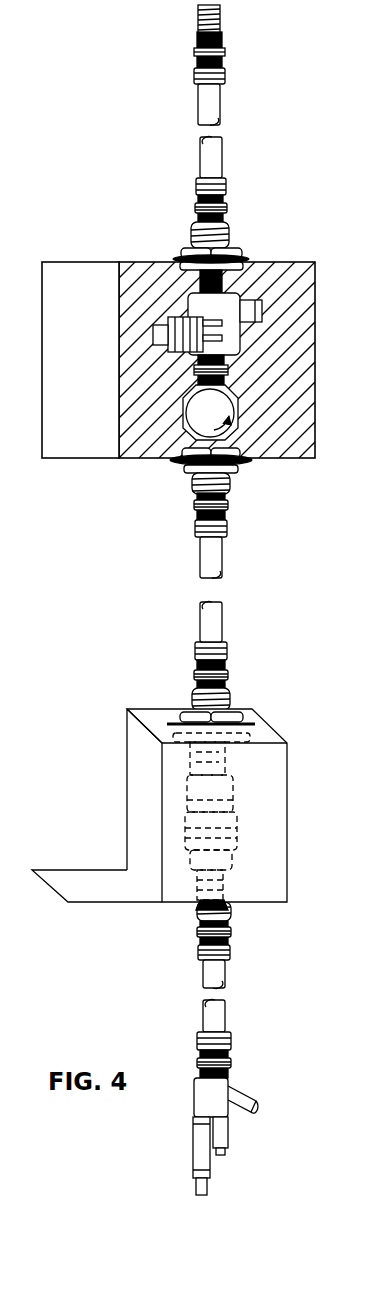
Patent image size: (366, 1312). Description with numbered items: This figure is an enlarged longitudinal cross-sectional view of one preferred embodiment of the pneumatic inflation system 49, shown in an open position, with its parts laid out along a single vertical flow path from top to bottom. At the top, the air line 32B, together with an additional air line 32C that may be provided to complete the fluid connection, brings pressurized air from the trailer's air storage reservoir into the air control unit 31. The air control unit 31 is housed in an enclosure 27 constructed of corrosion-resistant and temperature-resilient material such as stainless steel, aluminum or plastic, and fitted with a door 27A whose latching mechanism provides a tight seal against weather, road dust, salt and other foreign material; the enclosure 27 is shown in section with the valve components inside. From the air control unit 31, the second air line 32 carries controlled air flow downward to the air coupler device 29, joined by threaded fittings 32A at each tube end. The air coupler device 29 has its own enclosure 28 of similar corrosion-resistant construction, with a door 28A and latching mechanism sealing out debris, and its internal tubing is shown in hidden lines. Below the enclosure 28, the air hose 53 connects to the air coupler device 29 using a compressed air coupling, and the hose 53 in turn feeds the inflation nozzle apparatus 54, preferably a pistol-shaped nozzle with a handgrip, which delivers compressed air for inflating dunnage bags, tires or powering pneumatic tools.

The enclosure 27 is at (138, 262).
The door 27A is at (50, 262).
The enclosure 28 is at (127, 741).
The door 28A is at (81, 868).
The air coupler device 29 is at (165, 794).
The air control unit 31 is at (289, 260).
The air line 32 is at (200, 556).
The compression nut 32A is at (198, 203).
The air line 32B is at (198, 100).
The additional air line 32C is at (198, 28).
The inflation system 49 is at (205, 482).
The air hose 53 is at (203, 968).
The inflation nozzle apparatus 54 is at (194, 1105).